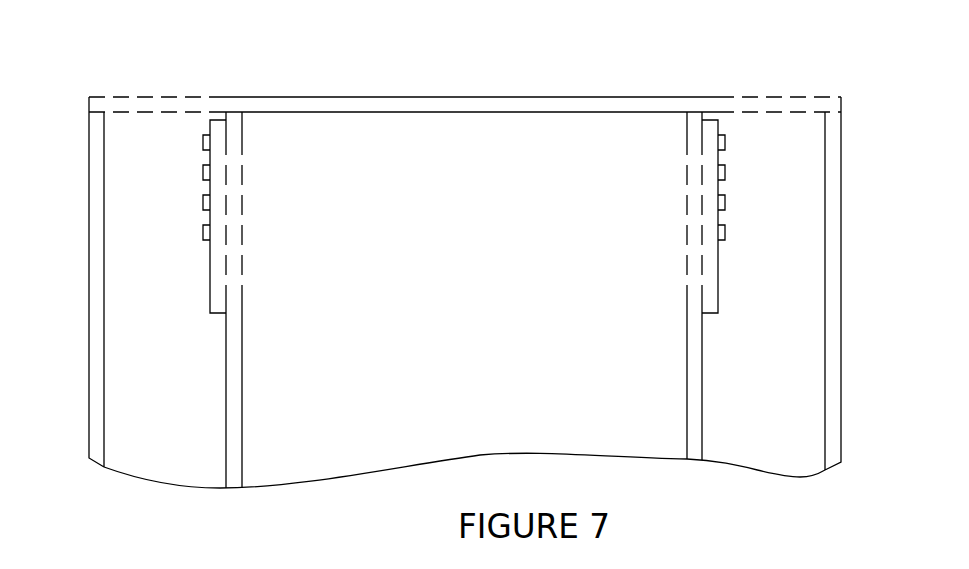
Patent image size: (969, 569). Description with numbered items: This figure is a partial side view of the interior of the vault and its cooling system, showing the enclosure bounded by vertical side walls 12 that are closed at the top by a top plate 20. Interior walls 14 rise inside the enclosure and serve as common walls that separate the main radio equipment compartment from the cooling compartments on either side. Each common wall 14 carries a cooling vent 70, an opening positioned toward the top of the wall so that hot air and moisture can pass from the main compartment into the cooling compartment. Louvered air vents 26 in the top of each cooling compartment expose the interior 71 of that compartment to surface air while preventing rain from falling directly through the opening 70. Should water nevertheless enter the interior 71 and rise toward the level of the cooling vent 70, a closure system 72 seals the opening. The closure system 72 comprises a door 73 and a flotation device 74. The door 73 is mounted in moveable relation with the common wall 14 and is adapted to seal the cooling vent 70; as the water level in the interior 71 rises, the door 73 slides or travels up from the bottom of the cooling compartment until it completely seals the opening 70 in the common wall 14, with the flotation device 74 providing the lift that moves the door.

The vertical side wall 12 is at (89, 333).
The interior wall 14 is at (243, 383).
The top plate 20 is at (423, 97).
The air vent 26 is at (133, 97).
The cooling vent 70 is at (232, 197).
The interior of the cooling compartment 71 is at (180, 430).
The closure system 72 is at (197, 300).
The door 73 is at (210, 275).
The flotation device 74 is at (203, 232).